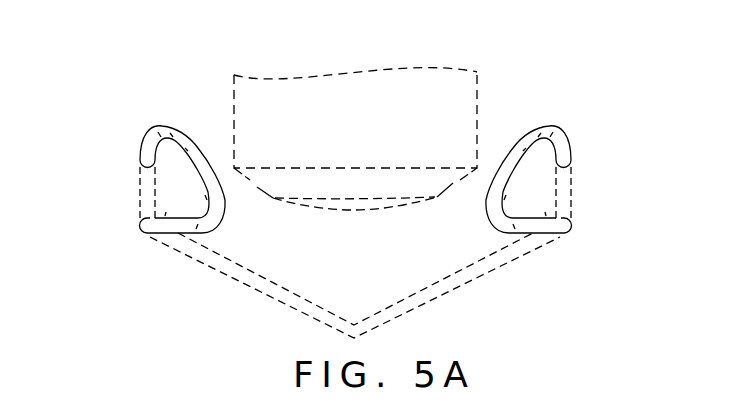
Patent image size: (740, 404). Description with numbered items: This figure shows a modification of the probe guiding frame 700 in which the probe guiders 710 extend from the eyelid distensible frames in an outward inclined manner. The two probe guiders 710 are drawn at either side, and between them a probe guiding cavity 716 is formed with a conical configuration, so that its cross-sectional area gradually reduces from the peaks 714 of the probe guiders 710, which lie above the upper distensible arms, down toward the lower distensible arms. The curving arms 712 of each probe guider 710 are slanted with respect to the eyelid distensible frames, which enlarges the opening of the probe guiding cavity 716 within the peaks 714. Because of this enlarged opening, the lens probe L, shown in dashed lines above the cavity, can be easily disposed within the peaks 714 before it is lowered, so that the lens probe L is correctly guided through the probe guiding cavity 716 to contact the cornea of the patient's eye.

The probe guiding frame 700 is at (578, 38).
The probe guiders 710 is at (356, 137).
The curving arms 712 is at (210, 185).
The peaks 714 is at (157, 123).
The probe guiding cavity 716 is at (265, 198).
The lens probe L is at (383, 107).